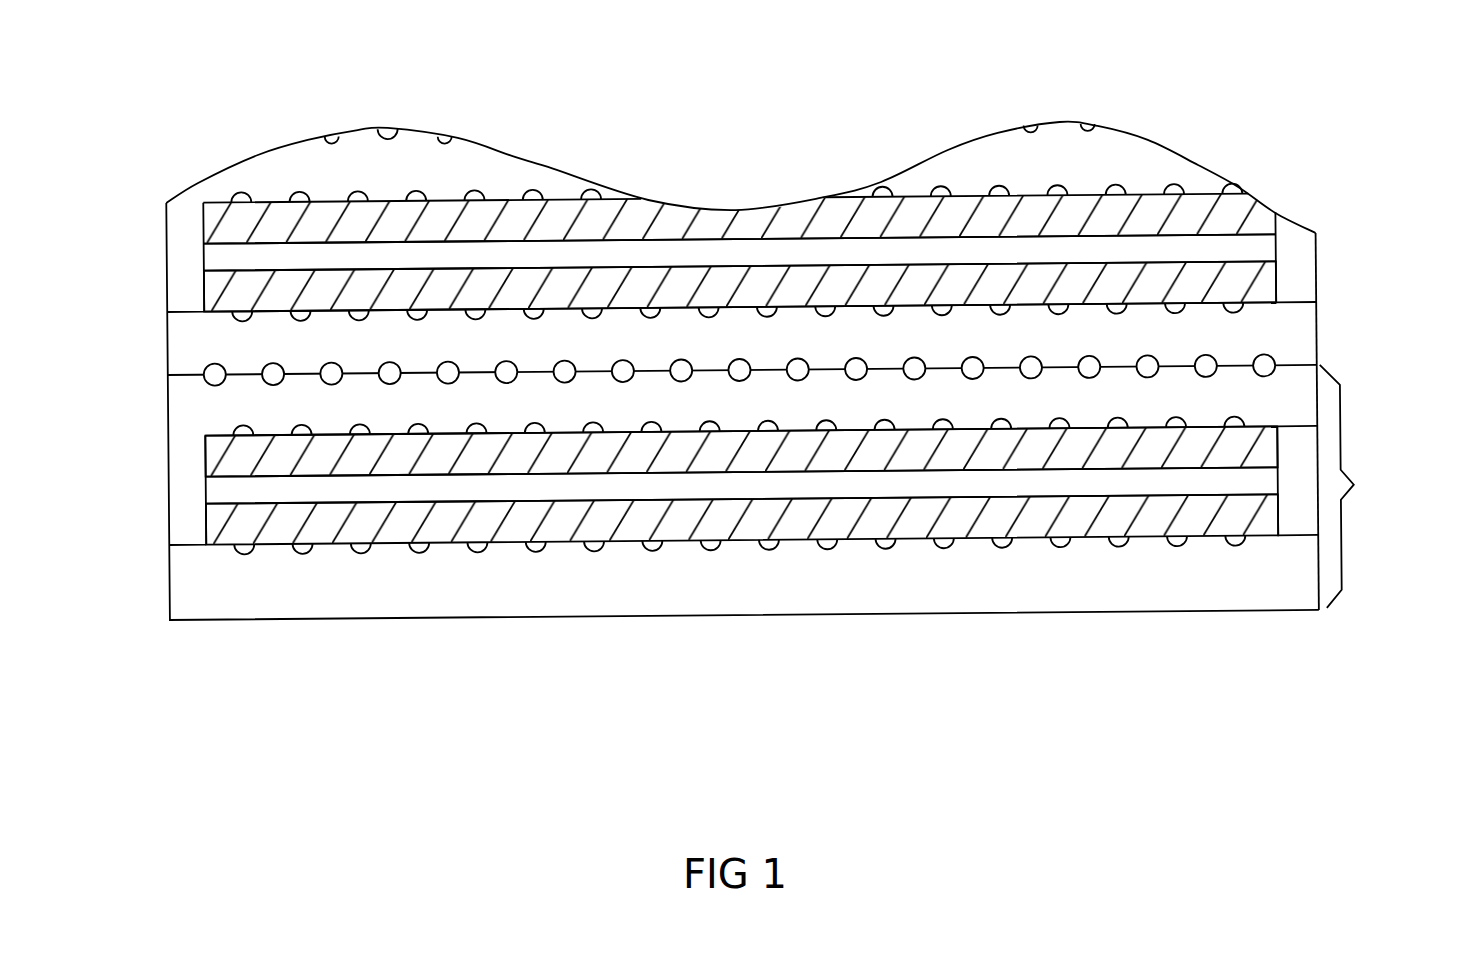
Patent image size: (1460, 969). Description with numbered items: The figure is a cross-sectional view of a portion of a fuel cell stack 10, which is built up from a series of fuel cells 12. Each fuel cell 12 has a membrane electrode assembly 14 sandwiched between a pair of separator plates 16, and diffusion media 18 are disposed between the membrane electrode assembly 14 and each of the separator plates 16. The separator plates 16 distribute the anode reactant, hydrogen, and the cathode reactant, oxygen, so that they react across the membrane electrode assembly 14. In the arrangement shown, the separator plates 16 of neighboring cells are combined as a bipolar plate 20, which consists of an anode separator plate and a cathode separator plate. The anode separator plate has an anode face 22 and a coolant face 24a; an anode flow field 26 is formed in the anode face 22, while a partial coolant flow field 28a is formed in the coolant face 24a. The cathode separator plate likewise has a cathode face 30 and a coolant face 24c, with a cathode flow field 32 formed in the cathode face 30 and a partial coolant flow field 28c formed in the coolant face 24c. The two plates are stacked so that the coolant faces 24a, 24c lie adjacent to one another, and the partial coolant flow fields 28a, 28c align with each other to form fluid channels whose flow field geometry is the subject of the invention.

The fuel cell stack 10 is at (1342, 142).
The fuel cell 12 is at (1355, 486).
The membrane electrode assembly 14 is at (226, 255).
The separator plate 16 is at (1310, 337).
The diffusion media 18 is at (1263, 216).
The bipolar plate 20 is at (1317, 355).
The anode face 22 is at (288, 313).
The coolant face 24a is at (1240, 379).
The coolant face 24c is at (247, 374).
The anode flow field 26 is at (1178, 323).
The partial coolant flow field 28a is at (565, 364).
The partial coolant flow field 28c is at (682, 386).
The cathode face 30 is at (277, 440).
The cathode flow field 32 is at (893, 432).